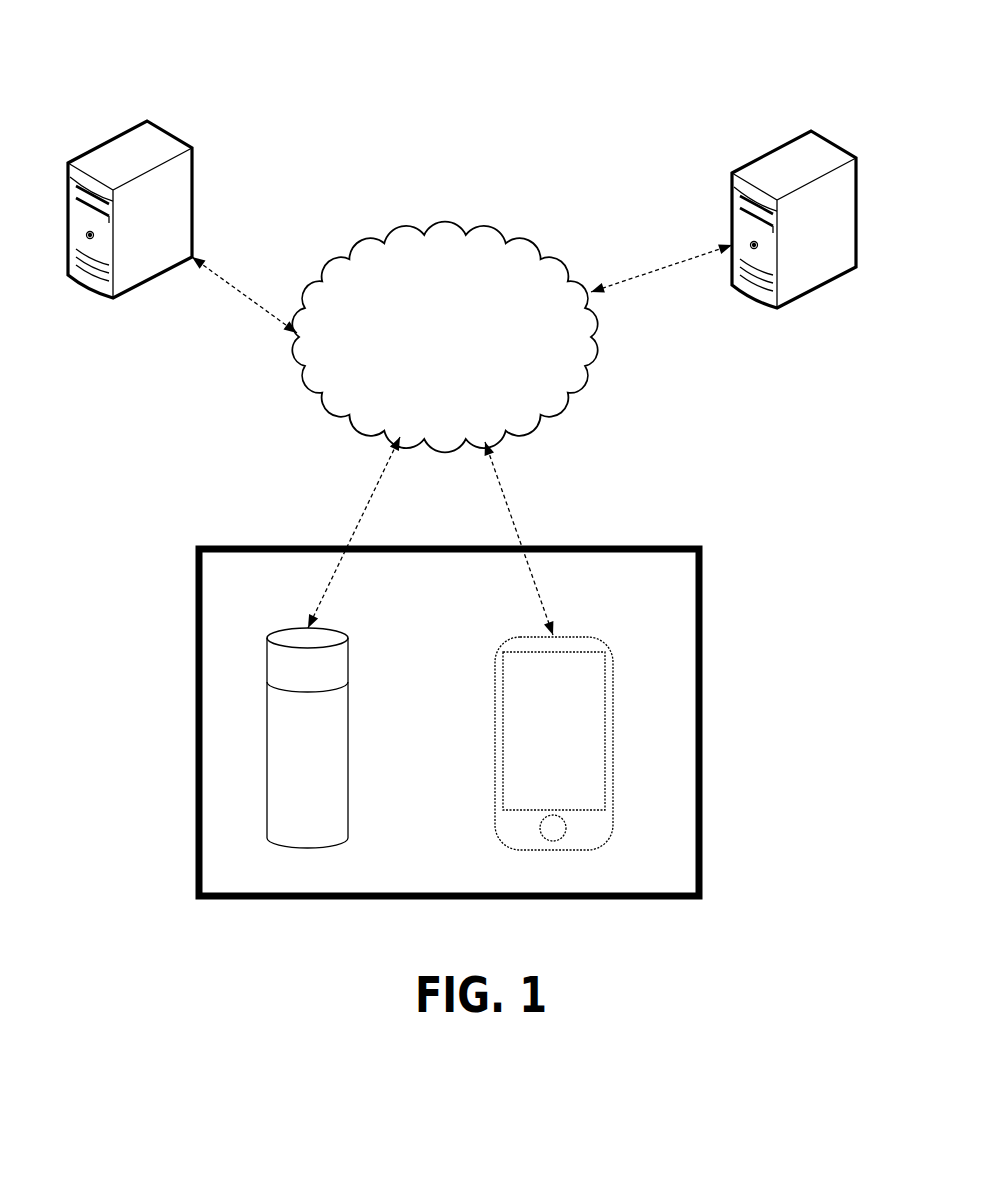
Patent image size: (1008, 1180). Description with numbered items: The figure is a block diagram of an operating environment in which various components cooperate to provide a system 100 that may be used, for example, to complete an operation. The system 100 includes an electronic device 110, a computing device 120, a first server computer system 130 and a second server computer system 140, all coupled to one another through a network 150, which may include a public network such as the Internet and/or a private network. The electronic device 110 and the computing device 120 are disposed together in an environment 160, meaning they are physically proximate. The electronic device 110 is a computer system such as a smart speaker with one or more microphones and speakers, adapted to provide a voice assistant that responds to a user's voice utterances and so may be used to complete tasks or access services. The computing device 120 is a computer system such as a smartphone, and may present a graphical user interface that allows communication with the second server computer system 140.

The system 100 is at (762, 73).
The electronic device 110 is at (340, 633).
The computing device 120 is at (590, 642).
The first server computer system 130 is at (156, 133).
The second server computer system 140 is at (812, 142).
The network 150 is at (427, 347).
The environment 160 is at (640, 585).